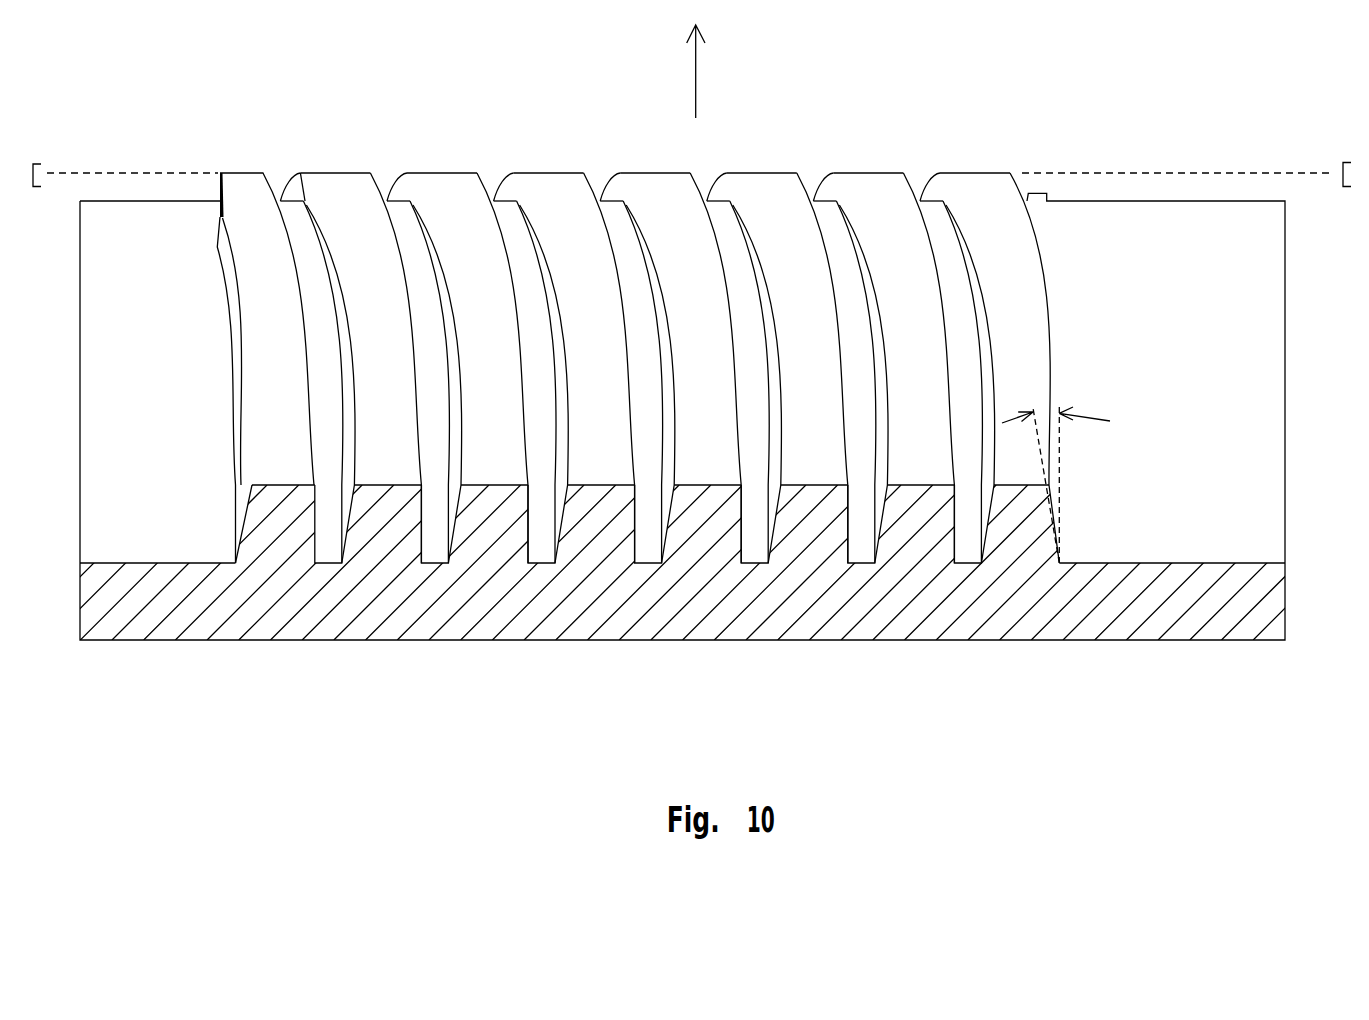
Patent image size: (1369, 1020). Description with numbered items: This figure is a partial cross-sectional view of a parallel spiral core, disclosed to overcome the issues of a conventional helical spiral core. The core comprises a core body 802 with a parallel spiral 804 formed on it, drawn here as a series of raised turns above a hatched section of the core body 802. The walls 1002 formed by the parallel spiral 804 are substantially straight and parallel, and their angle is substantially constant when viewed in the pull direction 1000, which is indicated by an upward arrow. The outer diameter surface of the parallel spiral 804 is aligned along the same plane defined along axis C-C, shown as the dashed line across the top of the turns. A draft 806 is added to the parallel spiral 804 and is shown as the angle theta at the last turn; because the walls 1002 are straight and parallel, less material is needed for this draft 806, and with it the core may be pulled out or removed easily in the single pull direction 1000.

The core body 802 is at (1220, 380).
The parallel spiral 804 is at (987, 178).
The draft 806 is at (975, 512).
The pull direction 1000 is at (696, 73).
The walls 1002 is at (607, 178).